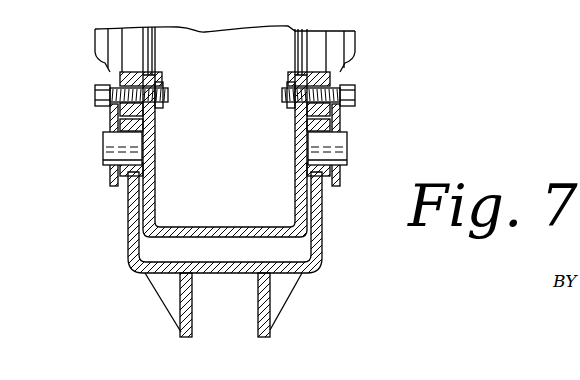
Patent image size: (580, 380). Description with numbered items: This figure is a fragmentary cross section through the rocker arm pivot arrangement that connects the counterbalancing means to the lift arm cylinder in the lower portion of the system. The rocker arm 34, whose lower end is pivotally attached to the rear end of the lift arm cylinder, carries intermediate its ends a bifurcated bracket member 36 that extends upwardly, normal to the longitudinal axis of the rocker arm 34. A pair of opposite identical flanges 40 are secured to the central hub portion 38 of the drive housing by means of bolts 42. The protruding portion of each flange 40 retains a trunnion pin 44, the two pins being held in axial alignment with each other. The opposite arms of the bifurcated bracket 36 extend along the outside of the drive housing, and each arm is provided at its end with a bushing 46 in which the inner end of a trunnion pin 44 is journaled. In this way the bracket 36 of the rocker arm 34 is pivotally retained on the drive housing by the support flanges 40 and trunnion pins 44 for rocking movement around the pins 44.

The rocker arm 34 is at (273, 328).
The bifurcated bracket member 36 is at (128, 251).
The central hub portion 38 is at (100, 43).
The flanges 40 is at (112, 180).
The bolts 42 is at (94, 97).
The trunnion pin 44 is at (108, 150).
The bushing 46 is at (308, 125).